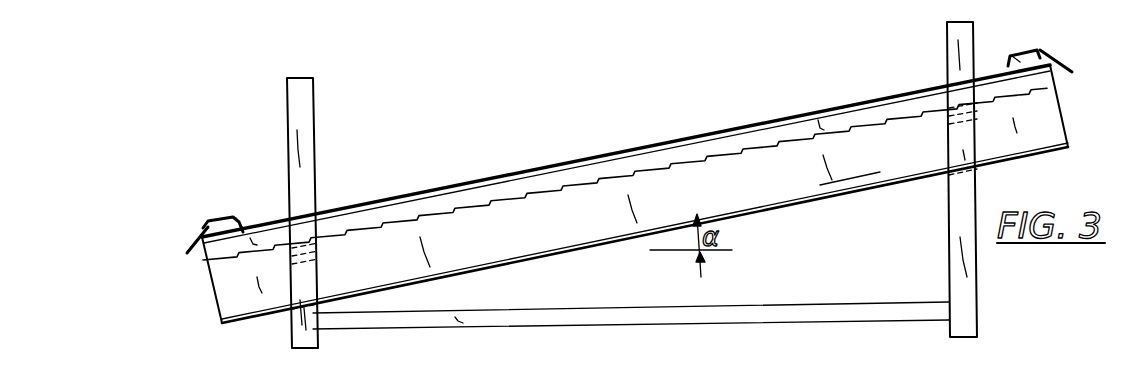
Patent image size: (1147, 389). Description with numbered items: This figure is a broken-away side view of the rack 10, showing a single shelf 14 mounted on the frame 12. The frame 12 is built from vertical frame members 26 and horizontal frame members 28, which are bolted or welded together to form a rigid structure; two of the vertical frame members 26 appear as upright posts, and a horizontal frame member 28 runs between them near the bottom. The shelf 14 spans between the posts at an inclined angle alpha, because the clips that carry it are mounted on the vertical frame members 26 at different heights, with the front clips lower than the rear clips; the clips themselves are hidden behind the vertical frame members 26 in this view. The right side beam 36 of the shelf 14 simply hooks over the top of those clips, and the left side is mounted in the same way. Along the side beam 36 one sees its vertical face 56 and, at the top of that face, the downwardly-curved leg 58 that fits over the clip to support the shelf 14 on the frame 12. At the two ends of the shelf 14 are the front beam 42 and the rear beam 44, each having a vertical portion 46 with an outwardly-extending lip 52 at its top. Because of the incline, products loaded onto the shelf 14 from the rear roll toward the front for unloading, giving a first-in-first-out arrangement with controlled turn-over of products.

The rack 10 is at (607, 72).
The frame 12 is at (276, 93).
The shelf 14 is at (806, 110).
The vertical frame members 26 is at (313, 93).
The horizontal frame members 28 is at (818, 270).
The right side beam 36 is at (423, 237).
The front beam 42 is at (215, 222).
The rear beam 44 is at (1030, 50).
The vertical portion 46 is at (248, 222).
The outwardly-extending lip 52 is at (190, 240).
The vertical face 56 is at (832, 168).
The downwardly-curved leg 58 is at (858, 118).